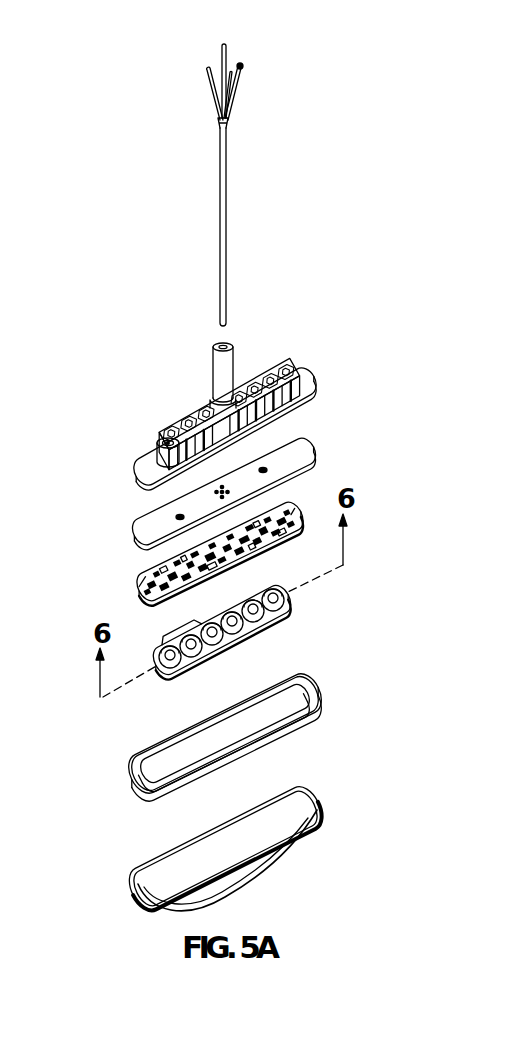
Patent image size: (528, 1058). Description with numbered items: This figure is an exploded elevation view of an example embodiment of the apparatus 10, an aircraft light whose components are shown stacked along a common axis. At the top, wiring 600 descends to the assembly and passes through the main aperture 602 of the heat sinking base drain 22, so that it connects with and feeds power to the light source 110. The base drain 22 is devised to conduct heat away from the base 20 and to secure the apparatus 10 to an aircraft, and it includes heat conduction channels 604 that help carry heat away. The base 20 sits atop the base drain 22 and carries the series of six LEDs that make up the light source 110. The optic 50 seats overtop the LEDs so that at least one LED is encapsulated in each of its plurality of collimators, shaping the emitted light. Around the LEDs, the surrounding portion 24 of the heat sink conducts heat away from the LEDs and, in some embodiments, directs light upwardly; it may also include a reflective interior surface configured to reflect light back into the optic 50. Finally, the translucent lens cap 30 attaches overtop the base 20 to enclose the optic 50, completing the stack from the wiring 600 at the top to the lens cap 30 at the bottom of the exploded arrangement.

The apparatus 10 is at (401, 316).
The base 20 is at (300, 450).
The heat sinking base drain 22 is at (300, 382).
The surrounding portion of heat sink 24 is at (278, 739).
The translucent lens cap 30 is at (284, 844).
The optic 50 is at (256, 636).
The light source 110 is at (283, 543).
The wiring 600 is at (227, 212).
The main aperture 602 is at (242, 386).
The heat conduction channels 604 is at (166, 439).